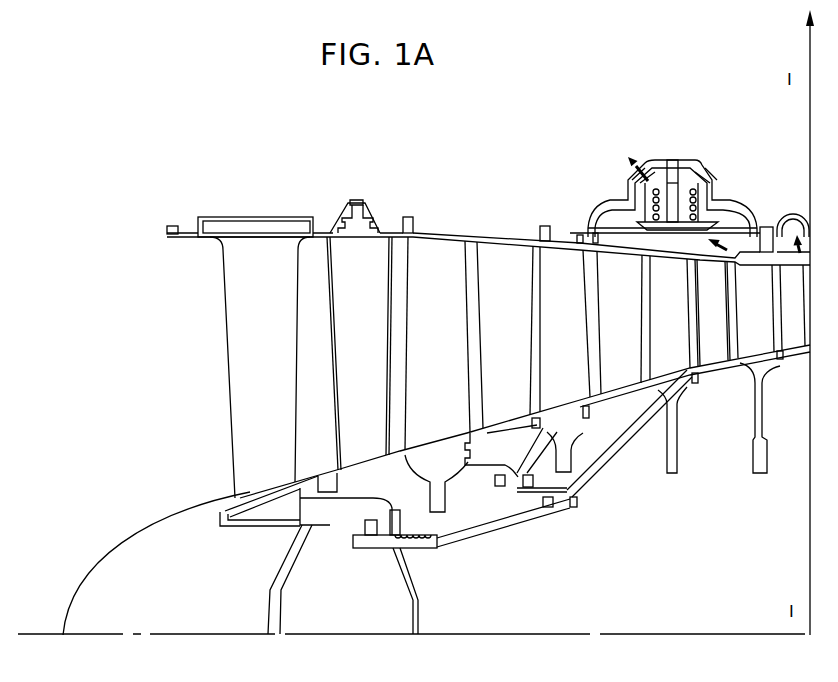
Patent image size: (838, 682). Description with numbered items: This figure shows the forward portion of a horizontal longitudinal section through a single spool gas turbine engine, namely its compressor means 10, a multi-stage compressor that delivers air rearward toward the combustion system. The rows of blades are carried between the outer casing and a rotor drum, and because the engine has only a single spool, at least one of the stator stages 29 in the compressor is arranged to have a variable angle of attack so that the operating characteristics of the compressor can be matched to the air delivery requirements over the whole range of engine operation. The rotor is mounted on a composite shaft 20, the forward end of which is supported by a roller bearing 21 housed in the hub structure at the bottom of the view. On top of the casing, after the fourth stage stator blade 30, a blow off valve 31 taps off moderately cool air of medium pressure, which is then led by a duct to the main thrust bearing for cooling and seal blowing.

The compressor means 10 is at (522, 332).
The composite shaft 20 is at (523, 518).
The roller bearing 21 is at (360, 527).
The stator stage 29 is at (359, 353).
The fourth stage stator blade 30 is at (712, 312).
The blow off valve 31 is at (656, 163).